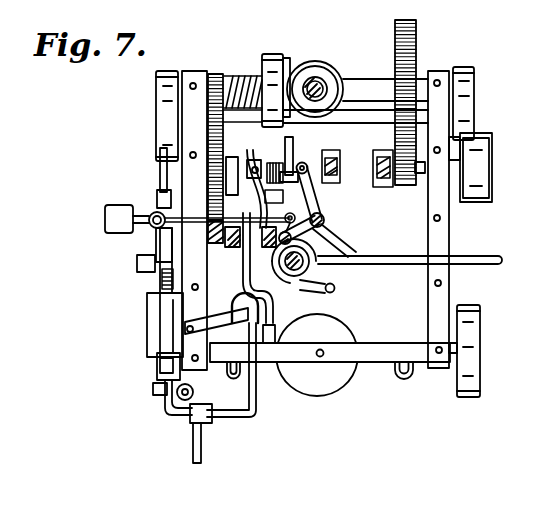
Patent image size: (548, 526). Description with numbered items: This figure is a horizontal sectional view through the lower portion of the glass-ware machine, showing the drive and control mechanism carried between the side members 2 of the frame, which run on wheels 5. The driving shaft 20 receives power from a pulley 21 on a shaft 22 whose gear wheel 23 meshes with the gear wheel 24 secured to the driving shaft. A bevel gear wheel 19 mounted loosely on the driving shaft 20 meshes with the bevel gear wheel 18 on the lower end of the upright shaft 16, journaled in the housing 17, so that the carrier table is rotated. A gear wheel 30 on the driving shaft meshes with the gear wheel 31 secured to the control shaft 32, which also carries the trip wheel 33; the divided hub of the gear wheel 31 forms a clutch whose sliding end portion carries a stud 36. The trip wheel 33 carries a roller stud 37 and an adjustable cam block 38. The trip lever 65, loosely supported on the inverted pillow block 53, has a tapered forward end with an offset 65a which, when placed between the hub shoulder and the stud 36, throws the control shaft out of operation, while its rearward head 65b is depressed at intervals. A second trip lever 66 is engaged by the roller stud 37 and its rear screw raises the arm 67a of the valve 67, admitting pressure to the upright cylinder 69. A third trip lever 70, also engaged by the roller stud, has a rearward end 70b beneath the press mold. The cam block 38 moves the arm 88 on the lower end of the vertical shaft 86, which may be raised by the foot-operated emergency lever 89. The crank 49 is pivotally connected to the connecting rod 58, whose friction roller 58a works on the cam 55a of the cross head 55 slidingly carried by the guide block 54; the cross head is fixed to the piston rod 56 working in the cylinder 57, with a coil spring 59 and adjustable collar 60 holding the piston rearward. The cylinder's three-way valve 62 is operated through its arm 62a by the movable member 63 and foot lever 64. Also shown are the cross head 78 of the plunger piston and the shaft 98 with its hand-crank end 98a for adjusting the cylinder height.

The side members 2 is at (452, 255).
The wheels 5 is at (473, 90).
The upright shaft 16 is at (328, 77).
The housing 17 is at (313, 76).
The bevel gear wheel 18 is at (336, 80).
The bevel gear wheel 19 is at (287, 58).
The driving shaft 20 is at (385, 90).
The pulley 21 is at (476, 167).
The shaft 22 is at (424, 176).
The gear wheel 23 is at (404, 186).
The gear wheel 24 is at (414, 49).
The gear wheel 30 is at (215, 72).
The gear wheel 31 is at (221, 141).
The control shaft 32 is at (345, 157).
The trip wheel 33 is at (292, 141).
The stud 36 is at (259, 166).
The roller stud 37 is at (304, 187).
The cam block 38 is at (309, 144).
The crank 49 is at (318, 241).
The inverted pillow block 53 is at (175, 302).
The guide block 54 is at (155, 211).
The cross head 55 is at (152, 205).
The cam 55a is at (151, 231).
The piston rod 56 is at (162, 274).
The cylinder 57 is at (147, 340).
The connecting rod 58 is at (159, 188).
The friction roller 58a is at (147, 229).
The coil spring 59 is at (162, 279).
The collar 60 is at (156, 193).
The valve 62 is at (160, 373).
The arm 62a is at (153, 395).
The movable member 63 is at (181, 401).
The foot lever 64 is at (137, 266).
The trip lever 65 is at (251, 192).
The offset 65a is at (254, 160).
The head 65b is at (281, 283).
The second trip lever 66 is at (289, 309).
The valve 67 is at (256, 358).
The arm 67a is at (274, 362).
The upright cylinder 69 is at (238, 322).
The third trip lever 70 is at (243, 256).
The rearward end 70b is at (232, 349).
The cross head 78 is at (216, 321).
The vertical shaft 86 is at (323, 227).
The arm 88 is at (302, 193).
The emergency lever 89 is at (127, 219).
The shaft 98 is at (404, 263).
The end 98a is at (497, 267).